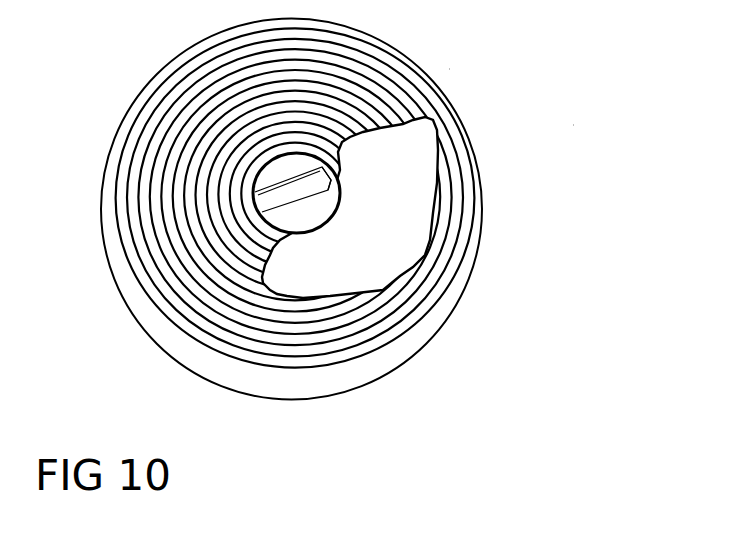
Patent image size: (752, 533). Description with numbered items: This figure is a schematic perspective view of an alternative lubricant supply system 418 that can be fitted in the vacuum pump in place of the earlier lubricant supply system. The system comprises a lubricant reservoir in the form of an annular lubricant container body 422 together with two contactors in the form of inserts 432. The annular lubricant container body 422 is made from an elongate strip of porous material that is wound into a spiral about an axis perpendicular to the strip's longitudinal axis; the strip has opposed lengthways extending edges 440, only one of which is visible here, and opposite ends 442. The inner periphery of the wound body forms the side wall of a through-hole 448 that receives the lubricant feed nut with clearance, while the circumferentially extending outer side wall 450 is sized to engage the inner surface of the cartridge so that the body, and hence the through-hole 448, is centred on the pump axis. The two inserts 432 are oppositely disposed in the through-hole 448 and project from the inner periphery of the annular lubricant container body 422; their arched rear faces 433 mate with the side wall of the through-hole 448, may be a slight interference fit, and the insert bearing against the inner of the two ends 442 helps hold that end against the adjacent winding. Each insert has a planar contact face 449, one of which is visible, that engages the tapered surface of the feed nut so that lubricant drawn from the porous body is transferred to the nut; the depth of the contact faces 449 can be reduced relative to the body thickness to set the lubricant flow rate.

The lubricant supply system 418 is at (576, 124).
The annular lubricant container body 422 is at (452, 68).
The contactors / inserts 432 is at (336, 180).
The arched rear faces 433 is at (285, 165).
The lengthways extending edges 440 is at (183, 74).
The ends 442 is at (470, 243).
The through-hole 448 is at (292, 210).
The planar contact faces 449 is at (272, 202).
The outer side wall 450 is at (278, 387).